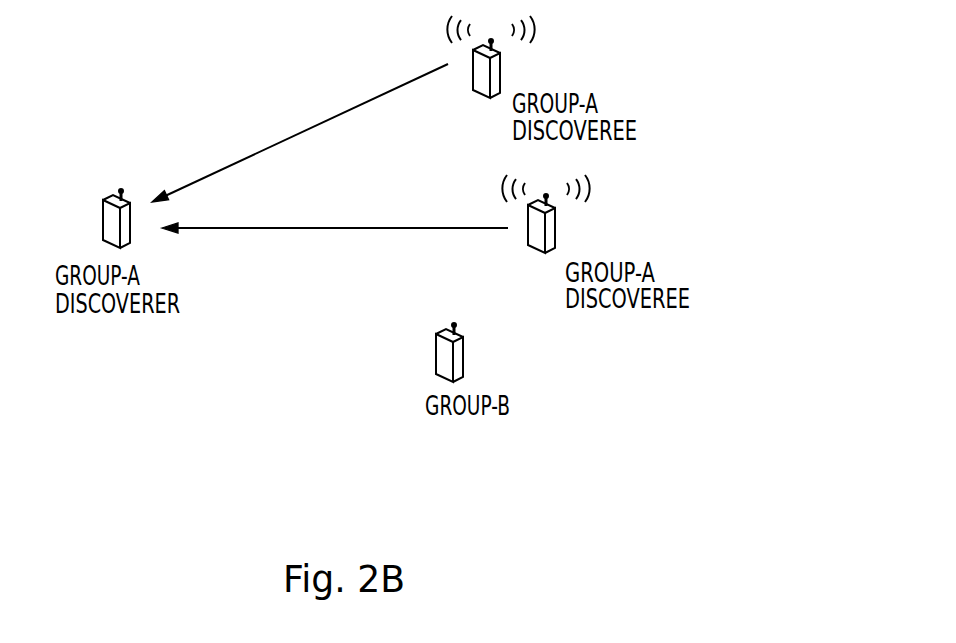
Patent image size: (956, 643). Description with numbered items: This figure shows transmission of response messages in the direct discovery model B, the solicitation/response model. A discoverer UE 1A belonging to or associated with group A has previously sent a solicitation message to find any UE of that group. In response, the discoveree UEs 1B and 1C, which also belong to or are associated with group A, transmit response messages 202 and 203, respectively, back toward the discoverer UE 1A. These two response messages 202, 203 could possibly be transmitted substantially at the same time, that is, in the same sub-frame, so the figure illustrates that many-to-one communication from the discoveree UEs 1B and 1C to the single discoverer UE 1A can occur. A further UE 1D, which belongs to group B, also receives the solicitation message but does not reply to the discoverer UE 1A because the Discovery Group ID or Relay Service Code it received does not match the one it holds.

The discoverer UE 1A is at (97, 227).
The discoveree UE 1B is at (502, 75).
The discoveree UE 1C is at (553, 232).
The UE 1D is at (465, 358).
The response message 202 is at (223, 168).
The response message 203 is at (412, 225).